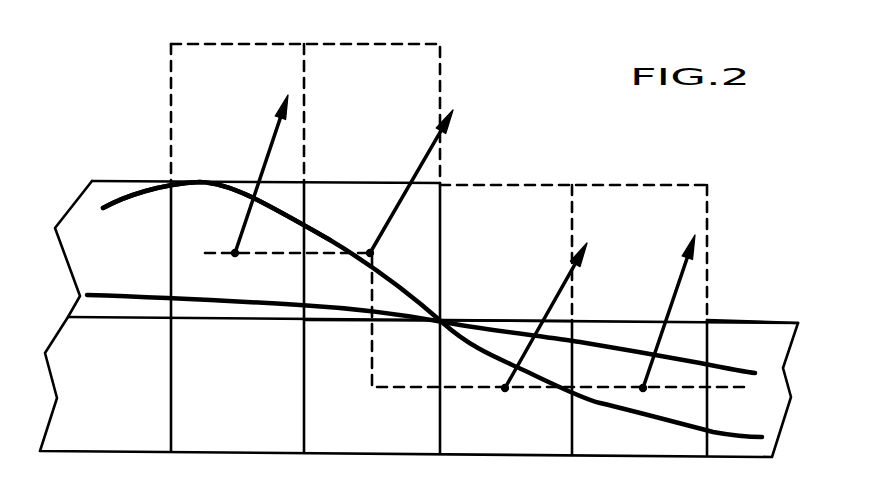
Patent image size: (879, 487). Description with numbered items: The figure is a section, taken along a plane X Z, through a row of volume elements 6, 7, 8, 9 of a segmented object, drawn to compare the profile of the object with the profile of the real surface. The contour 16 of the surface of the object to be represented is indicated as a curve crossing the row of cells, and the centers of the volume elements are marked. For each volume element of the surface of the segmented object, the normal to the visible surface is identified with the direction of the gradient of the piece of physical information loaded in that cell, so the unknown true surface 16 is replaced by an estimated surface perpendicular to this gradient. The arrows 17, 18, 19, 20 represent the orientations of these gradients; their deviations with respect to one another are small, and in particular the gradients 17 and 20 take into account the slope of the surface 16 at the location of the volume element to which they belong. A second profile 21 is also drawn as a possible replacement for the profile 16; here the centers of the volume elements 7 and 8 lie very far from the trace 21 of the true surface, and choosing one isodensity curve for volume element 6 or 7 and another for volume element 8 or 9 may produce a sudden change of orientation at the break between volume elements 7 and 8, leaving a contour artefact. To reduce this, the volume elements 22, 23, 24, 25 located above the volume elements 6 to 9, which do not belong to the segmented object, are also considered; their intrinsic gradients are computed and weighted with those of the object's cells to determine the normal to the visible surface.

The volume element 6 is at (690, 342).
The volume element 7 is at (480, 405).
The volume element 8 is at (422, 217).
The volume element 9 is at (212, 230).
The contour of the surface of the object 16 is at (752, 438).
The arrow representing gradient orientation 17 is at (680, 258).
The arrow representing gradient orientation 18 is at (560, 297).
The arrow representing gradient orientation 19 is at (443, 147).
The arrow representing gradient orientation 20 is at (267, 155).
The profile of the true surface 21 is at (752, 372).
The volume element 22 is at (632, 233).
The volume element 23 is at (512, 214).
The volume element 24 is at (357, 72).
The volume element 25 is at (220, 82).